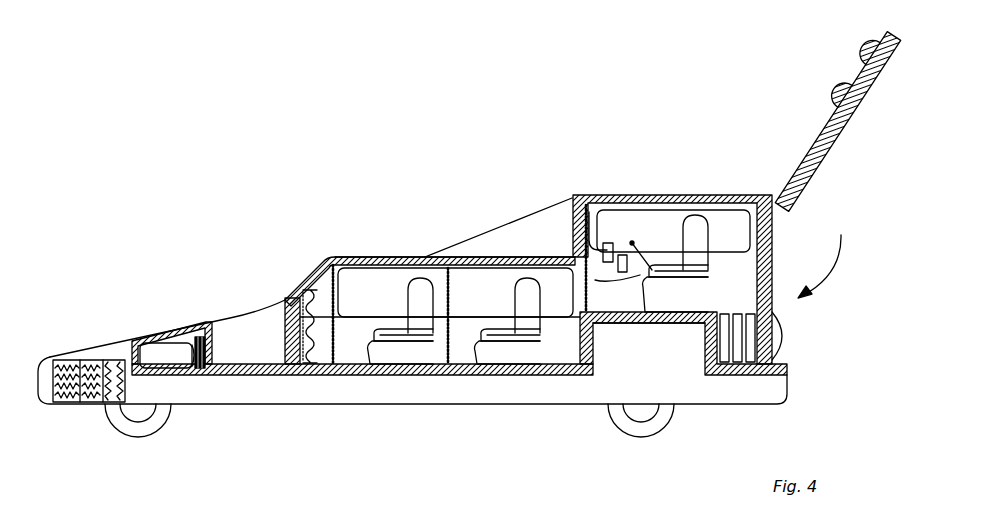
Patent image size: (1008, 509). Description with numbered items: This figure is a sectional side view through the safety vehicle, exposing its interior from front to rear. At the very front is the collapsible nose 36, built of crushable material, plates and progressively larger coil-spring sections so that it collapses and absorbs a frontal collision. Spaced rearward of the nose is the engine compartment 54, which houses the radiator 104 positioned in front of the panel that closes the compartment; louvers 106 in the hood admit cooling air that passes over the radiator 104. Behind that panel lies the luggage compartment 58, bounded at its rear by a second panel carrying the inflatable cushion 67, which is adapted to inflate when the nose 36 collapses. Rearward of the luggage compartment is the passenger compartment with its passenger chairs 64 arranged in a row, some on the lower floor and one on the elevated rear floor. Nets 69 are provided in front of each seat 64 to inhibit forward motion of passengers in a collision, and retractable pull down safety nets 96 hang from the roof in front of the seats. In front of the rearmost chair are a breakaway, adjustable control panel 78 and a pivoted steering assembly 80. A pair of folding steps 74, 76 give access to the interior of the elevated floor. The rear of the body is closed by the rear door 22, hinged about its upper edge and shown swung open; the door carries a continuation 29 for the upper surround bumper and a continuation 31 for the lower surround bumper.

The rear door 22 is at (807, 157).
The continuation for the upper bumper 29 is at (843, 85).
The continuation for the lower bumper 31 is at (873, 33).
The collapsible nose 36 is at (36, 405).
The engine compartment 54 is at (210, 348).
The luggage compartment 58 is at (247, 328).
The passenger chairs 64 is at (410, 297).
The inflatable cushion 67 is at (295, 297).
The nets 69 is at (333, 262).
The folding step 74 is at (703, 330).
The folding step 76 is at (760, 344).
The control panel 78 is at (570, 198).
The steering assembly 80 is at (570, 257).
The retractable pull down safety nets 96 is at (590, 280).
The radiator 104 is at (203, 325).
The louvers 106 is at (163, 337).